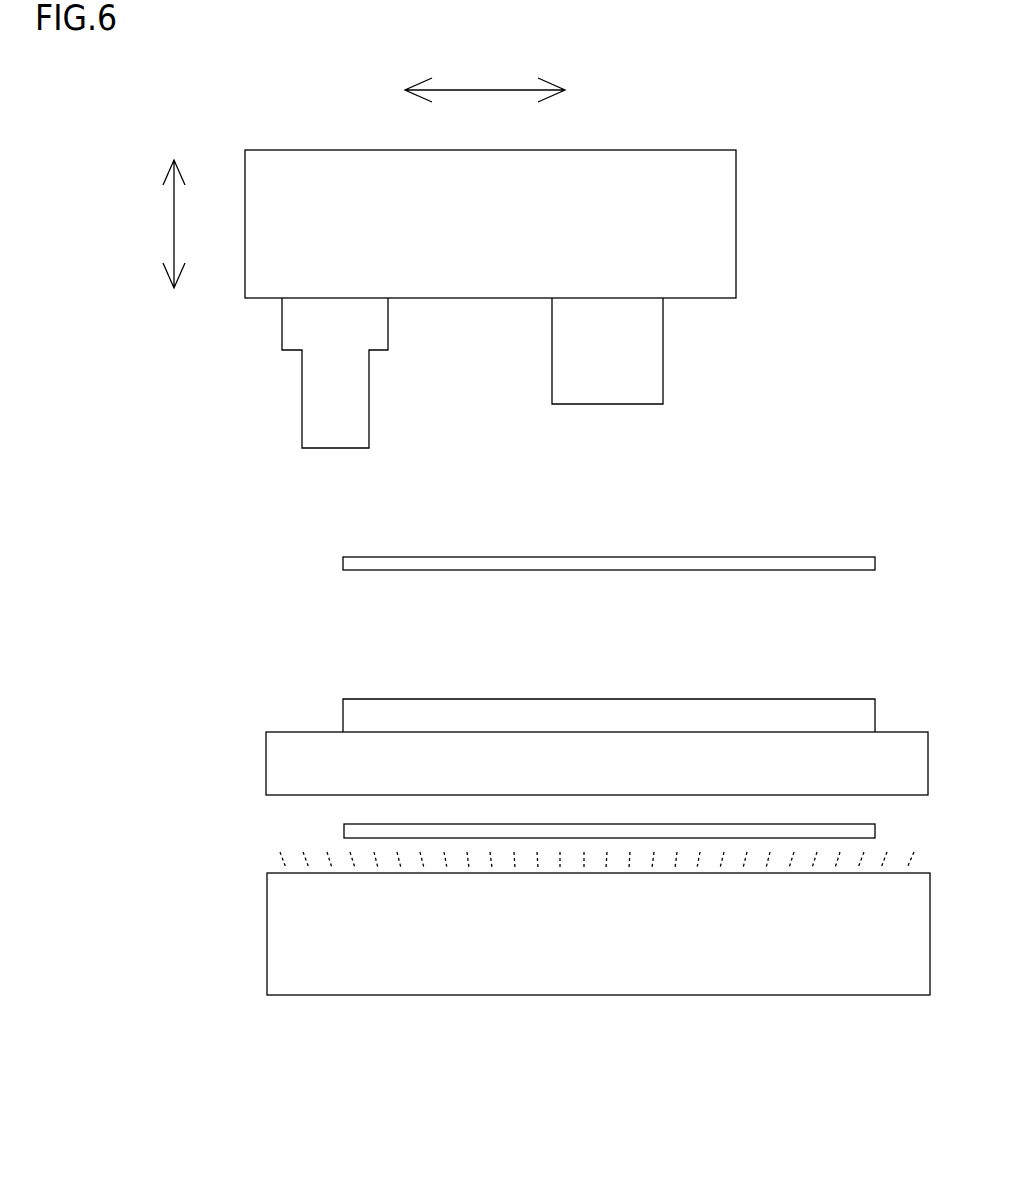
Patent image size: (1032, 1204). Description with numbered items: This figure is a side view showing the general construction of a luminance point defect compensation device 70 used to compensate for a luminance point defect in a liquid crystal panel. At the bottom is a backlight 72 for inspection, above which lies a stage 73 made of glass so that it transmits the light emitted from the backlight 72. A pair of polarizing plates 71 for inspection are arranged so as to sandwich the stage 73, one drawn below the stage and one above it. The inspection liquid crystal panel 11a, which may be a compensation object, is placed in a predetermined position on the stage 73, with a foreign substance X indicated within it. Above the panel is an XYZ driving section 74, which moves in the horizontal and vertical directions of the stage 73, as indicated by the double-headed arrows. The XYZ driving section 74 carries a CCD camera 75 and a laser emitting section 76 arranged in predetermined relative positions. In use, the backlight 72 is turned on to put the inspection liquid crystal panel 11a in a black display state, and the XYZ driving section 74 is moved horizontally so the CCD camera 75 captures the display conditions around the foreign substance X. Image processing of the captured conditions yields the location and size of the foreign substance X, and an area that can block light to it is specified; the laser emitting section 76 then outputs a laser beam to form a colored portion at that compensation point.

The luminance point defect compensation device 70 is at (172, 682).
The polarizing plates 71 is at (848, 562).
The backlight 72 is at (385, 975).
The stage 73 is at (275, 754).
The XYZ driving section 74 is at (646, 177).
The CCD camera 75 is at (645, 360).
The laser emitting section 76 is at (319, 399).
The inspection liquid crystal panel 11a is at (852, 708).
The foreign substance X is at (608, 719).